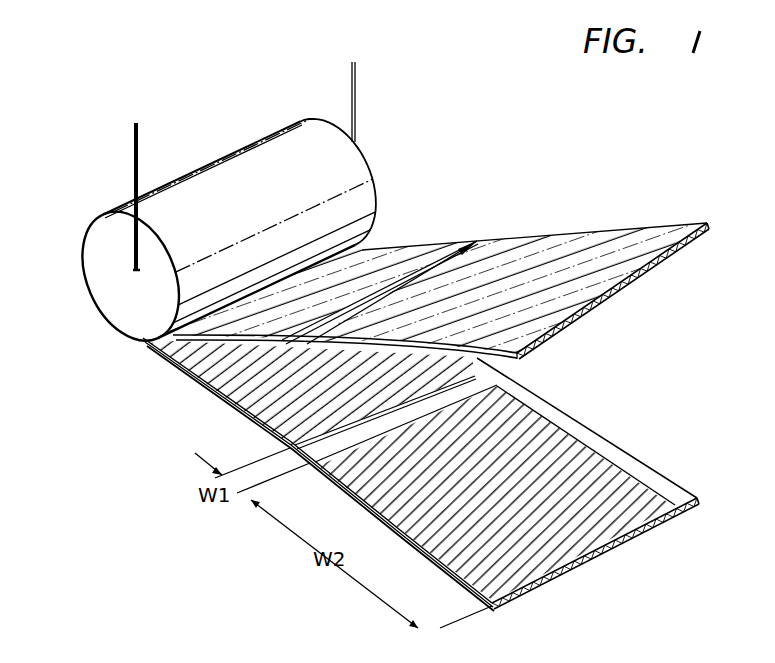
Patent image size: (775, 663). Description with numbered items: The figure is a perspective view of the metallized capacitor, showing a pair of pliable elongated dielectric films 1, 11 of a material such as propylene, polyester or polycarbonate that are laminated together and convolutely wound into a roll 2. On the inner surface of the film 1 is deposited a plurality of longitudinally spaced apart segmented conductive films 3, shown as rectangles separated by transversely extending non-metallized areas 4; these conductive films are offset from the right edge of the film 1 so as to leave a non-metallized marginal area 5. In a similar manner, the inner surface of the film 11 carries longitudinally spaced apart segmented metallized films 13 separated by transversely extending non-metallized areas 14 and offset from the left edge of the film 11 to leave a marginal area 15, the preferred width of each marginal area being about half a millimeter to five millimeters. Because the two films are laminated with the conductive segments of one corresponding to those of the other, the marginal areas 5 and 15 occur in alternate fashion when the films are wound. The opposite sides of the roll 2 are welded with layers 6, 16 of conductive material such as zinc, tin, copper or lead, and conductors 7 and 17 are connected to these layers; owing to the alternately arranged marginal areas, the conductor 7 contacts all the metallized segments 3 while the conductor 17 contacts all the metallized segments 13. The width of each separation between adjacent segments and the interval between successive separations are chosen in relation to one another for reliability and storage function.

The pliable elongated film 1 is at (627, 541).
The roll 2 is at (245, 160).
The segmented conductive films 3 is at (250, 383).
The non-metallized areas 4 is at (490, 377).
The non-metallized marginal area 5 is at (595, 443).
The conductive layer 6 is at (117, 297).
The conductor 7 is at (133, 163).
The pliable elongated film 11 is at (707, 226).
The segmented metallized films 13 is at (391, 255).
The non-metallized areas 14 is at (452, 255).
The marginal area 15 is at (555, 348).
The conductive layer 16 is at (372, 176).
The conductor 17 is at (356, 70).